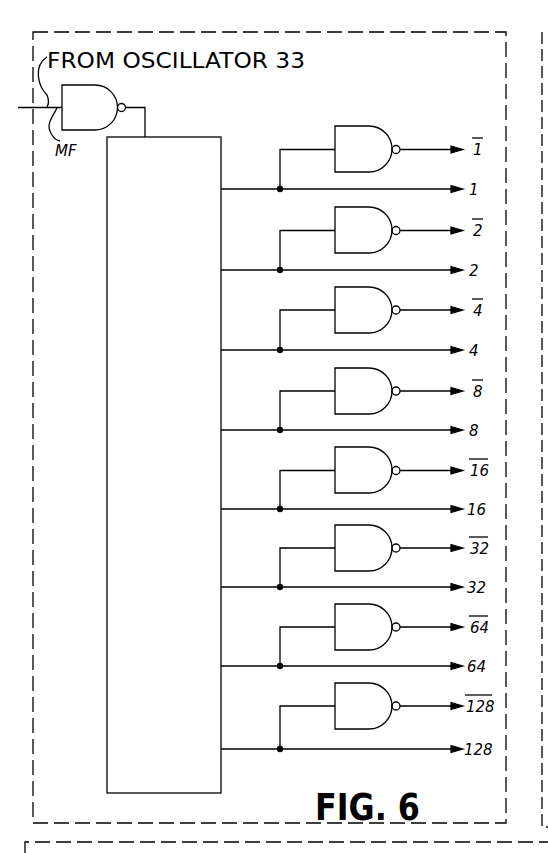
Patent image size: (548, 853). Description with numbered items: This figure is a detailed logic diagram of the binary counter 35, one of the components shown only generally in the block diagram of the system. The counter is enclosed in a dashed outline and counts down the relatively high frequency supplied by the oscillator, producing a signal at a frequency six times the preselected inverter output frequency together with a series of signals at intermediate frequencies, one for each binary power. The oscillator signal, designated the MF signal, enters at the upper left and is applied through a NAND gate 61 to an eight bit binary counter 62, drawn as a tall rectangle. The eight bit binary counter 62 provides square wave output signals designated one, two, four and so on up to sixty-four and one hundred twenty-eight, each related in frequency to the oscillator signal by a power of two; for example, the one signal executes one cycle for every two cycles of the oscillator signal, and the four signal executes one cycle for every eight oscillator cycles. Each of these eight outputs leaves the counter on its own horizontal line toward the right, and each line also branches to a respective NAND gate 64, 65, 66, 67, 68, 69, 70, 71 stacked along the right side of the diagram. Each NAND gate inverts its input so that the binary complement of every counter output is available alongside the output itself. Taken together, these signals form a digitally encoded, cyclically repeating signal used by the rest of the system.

The binary counter 35 is at (313, 14).
The NAND gate 61 is at (112, 90).
The eight bit binary counter 62 is at (107, 353).
The NAND gate 64 is at (387, 129).
The NAND gate 65 is at (387, 210).
The NAND gate 66 is at (387, 290).
The NAND gate 67 is at (387, 371).
The NAND gate 68 is at (387, 450).
The NAND gate 69 is at (387, 528).
The NAND gate 70 is at (387, 607).
The NAND gate 71 is at (387, 686).